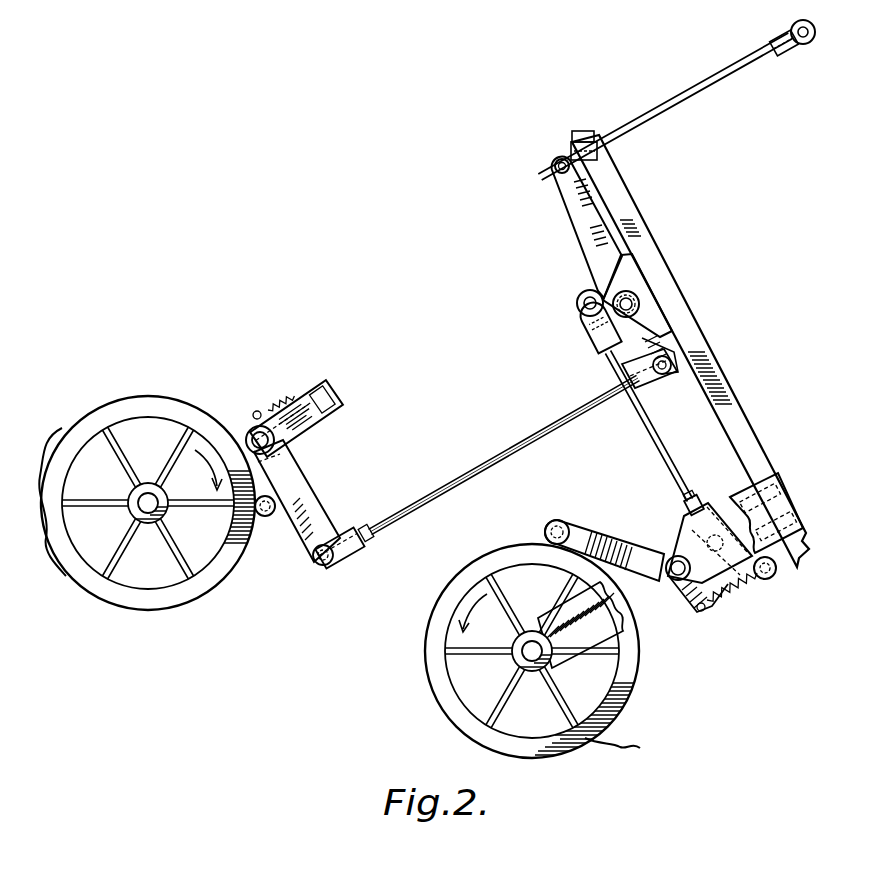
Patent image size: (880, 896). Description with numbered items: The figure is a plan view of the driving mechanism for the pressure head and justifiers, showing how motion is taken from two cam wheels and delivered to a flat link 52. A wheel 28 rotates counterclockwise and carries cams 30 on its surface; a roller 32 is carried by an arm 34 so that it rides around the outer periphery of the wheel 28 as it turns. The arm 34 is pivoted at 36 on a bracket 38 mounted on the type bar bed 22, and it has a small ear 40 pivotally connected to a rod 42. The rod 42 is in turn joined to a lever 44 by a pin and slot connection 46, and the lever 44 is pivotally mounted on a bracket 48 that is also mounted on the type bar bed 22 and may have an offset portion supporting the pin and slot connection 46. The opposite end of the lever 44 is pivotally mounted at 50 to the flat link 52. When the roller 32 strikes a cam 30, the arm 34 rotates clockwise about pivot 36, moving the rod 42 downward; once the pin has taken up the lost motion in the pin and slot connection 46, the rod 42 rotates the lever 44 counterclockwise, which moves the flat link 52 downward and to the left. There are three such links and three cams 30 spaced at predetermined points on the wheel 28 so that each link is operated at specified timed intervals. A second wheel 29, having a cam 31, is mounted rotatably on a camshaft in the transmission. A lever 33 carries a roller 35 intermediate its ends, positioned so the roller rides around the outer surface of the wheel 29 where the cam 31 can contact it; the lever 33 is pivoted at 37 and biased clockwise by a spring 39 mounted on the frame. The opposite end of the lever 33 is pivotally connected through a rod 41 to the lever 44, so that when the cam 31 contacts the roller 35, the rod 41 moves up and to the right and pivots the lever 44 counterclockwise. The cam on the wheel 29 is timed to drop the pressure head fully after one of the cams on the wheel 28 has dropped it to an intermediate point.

The type bar bed 22 is at (726, 396).
The wheel 28 is at (638, 664).
The wheel 29 is at (200, 597).
The cam 30 is at (633, 746).
The cam 31 is at (43, 437).
The roller 32 is at (555, 521).
The lever 33 is at (298, 490).
The arm 34 is at (601, 538).
The roller 35 is at (263, 518).
The pivot 36 is at (674, 581).
The pivot 37 is at (252, 429).
The bracket 38 is at (687, 546).
The spring 39 is at (276, 404).
The ear 40 is at (708, 518).
The rod 41 is at (474, 480).
The rod 42 is at (656, 443).
The lever 44 is at (600, 287).
The pin and slot connection 46 is at (590, 323).
The bracket 48 is at (632, 267).
The pivot 50 is at (553, 167).
The flat link 52 is at (698, 95).